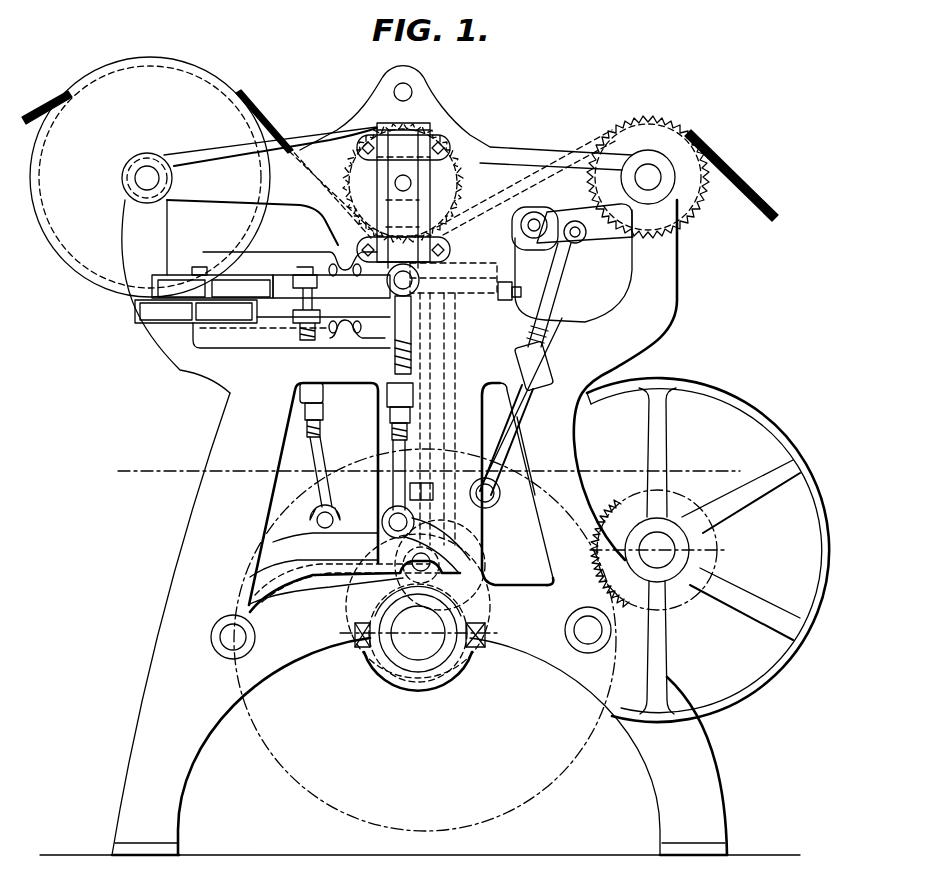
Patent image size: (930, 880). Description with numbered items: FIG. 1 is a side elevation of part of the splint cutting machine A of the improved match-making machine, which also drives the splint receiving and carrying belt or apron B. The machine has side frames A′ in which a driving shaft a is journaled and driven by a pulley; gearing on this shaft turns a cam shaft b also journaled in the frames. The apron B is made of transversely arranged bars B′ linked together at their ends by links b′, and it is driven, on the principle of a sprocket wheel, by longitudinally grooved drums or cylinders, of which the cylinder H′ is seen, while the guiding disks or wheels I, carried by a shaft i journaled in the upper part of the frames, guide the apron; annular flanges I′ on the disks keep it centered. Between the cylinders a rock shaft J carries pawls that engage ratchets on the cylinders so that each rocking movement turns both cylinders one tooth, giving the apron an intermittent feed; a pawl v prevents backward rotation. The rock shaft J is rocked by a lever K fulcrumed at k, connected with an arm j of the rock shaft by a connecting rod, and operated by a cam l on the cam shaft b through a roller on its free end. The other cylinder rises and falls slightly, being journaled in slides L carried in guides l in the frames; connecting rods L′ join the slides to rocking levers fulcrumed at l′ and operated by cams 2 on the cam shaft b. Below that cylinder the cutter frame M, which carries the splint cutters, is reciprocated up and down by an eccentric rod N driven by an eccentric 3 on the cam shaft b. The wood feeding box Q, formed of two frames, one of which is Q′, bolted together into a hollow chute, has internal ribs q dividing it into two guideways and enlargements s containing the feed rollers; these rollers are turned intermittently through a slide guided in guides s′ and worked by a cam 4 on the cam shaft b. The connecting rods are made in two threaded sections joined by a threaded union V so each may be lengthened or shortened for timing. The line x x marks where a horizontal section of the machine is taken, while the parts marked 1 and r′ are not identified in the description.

The guiding disks I is at (150, 177).
The annular flanges I′ is at (207, 82).
The shaft i is at (145, 178).
The splint carrying belt or apron B is at (256, 126).
The pawl v is at (307, 136).
The guides l is at (433, 135).
The slide L is at (432, 177).
The splint cutting machine A is at (522, 112).
The driving drum or cylinder H′ is at (655, 122).
The internal intermediate rib q is at (212, 287).
The wood feeding box Q is at (243, 321).
The feeding box frame Q′ is at (167, 320).
The enlargements s is at (312, 262).
The guides s′ is at (352, 340).
The connecting rod L′ is at (395, 336).
The cutter frame M is at (458, 306).
The eccentric rod N is at (425, 378).
The rock shaft J is at (535, 240).
The arm j is at (578, 236).
The lever K is at (548, 290).
The threaded union V is at (548, 356).
The side frames A′ is at (662, 302).
The driving shaft a is at (657, 550).
The fulcrum l′ is at (222, 637).
The cam shaft b is at (420, 637).
The eccentric 1 is at (455, 583).
The cam 2 is at (362, 648).
The eccentric 3 is at (465, 603).
The cam 4 is at (478, 620).
The fulcrum k is at (585, 636).
The section line x is at (419, 470).
The base r′ is at (151, 874).
The links b′ is at (208, 874).
The bars B′ is at (326, 873).